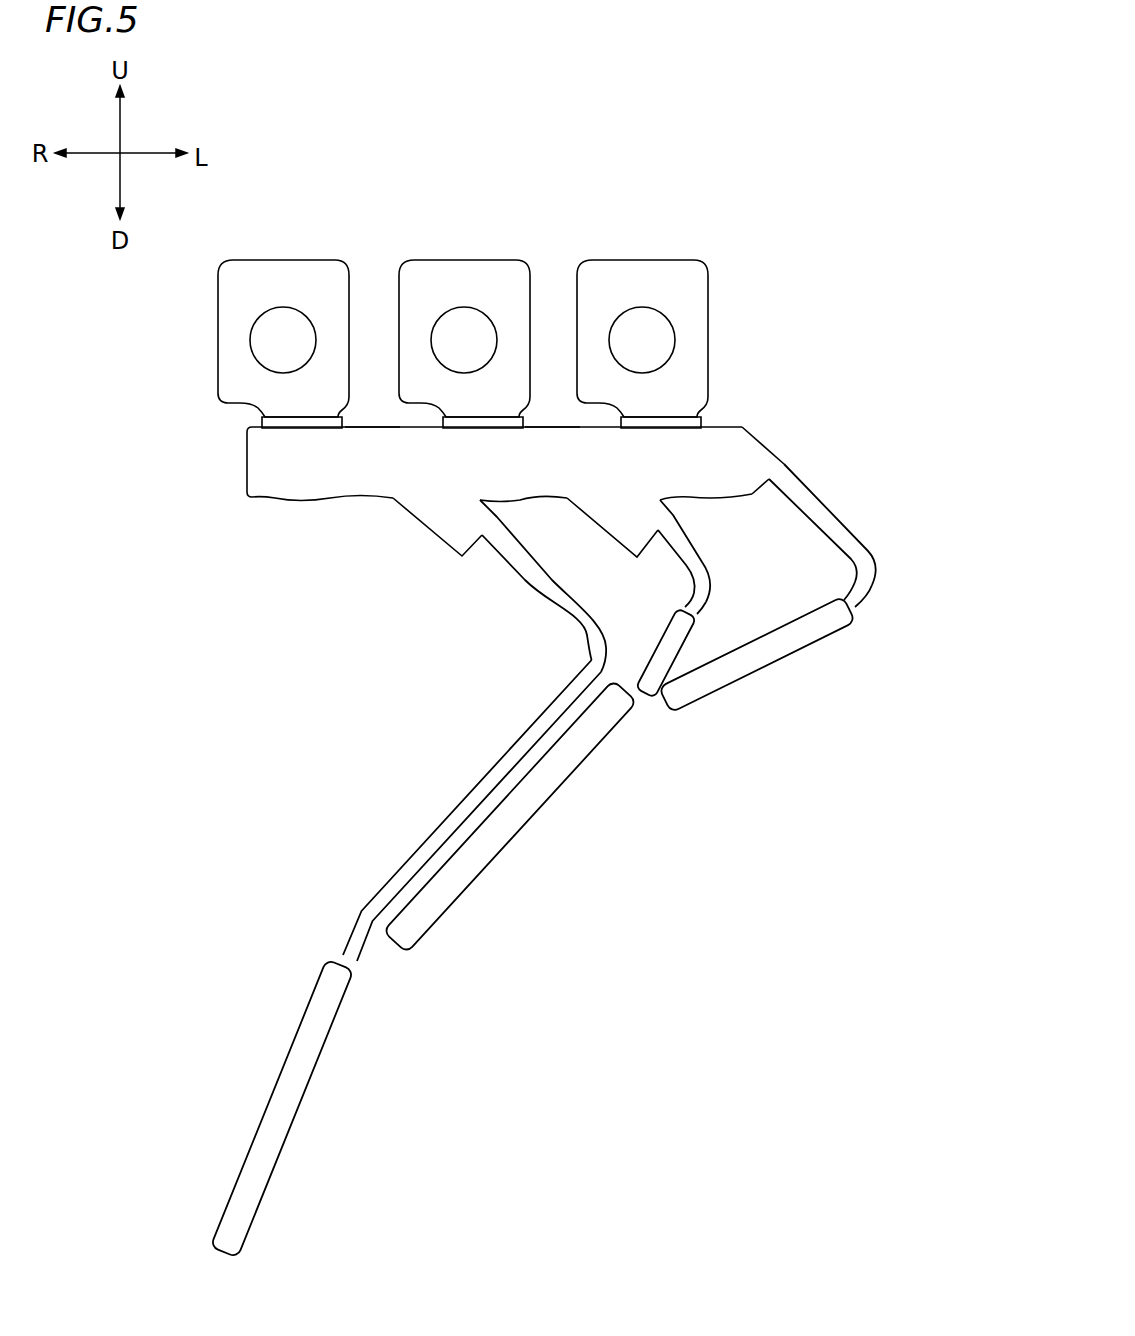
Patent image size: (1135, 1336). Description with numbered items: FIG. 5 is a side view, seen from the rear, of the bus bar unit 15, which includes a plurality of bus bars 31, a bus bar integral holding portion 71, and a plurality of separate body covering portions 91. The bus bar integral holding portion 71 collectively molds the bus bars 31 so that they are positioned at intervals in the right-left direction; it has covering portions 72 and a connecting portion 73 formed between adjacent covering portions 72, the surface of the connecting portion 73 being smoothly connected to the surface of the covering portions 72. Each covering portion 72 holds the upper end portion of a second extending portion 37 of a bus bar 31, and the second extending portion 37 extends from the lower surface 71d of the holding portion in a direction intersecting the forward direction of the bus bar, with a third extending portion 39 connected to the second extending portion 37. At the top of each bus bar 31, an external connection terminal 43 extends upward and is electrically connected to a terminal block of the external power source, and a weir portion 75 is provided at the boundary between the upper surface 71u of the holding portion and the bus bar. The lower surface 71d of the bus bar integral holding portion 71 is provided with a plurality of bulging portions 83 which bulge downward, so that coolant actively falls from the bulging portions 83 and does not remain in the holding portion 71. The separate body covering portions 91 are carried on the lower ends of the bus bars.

The bus bar unit 15 is at (532, 668).
The bus bar 31 is at (465, 291).
The external connection terminal 43 is at (237, 288).
The weir portion 75 is at (287, 415).
The connecting portion 73 is at (397, 447).
The bus bar integral holding portion 71 is at (493, 470).
The upper surface 71u is at (713, 423).
The lower surface 71d is at (280, 498).
The covering portion 72 is at (270, 473).
The bulging portion 83 is at (333, 502).
The second extending portion 37 is at (542, 600).
The third extending portion 39 is at (465, 795).
The separate body covering portion 91 is at (297, 1030).